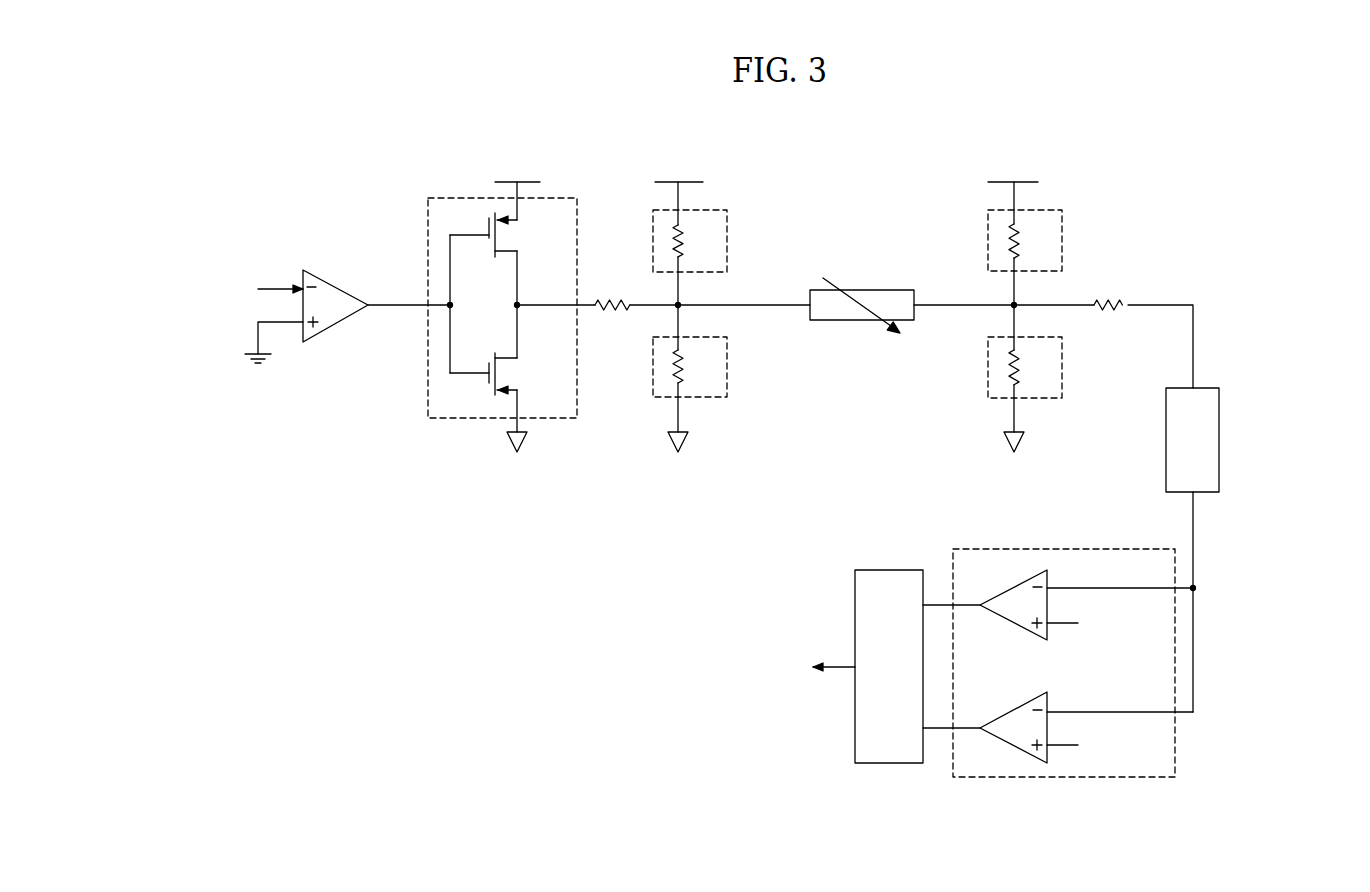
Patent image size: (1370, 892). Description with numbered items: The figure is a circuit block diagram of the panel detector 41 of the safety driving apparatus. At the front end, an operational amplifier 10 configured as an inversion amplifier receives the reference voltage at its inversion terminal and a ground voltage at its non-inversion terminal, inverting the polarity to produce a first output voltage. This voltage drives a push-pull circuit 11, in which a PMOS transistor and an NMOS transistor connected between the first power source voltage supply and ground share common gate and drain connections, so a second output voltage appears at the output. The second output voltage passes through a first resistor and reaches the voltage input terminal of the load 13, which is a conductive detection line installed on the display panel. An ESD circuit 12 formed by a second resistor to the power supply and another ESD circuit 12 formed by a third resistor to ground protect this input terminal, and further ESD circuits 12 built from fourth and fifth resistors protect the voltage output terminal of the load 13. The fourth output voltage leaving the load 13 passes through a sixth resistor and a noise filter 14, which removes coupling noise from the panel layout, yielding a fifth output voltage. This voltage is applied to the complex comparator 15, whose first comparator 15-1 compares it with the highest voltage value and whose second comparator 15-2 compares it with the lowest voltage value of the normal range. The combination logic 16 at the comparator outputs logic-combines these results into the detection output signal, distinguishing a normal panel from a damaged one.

The operational amplifier 10 is at (337, 325).
The push-pull circuit 11 is at (428, 215).
The ESD circuit 12 is at (727, 218).
The load 13 is at (892, 290).
The noise filter 14 is at (1219, 462).
The complex comparator 15 is at (1073, 659).
The first comparator 15-1 is at (1022, 580).
The second comparator 15-2 is at (1005, 742).
The combination logic 16 is at (876, 570).
The panel detector 41 is at (1214, 159).